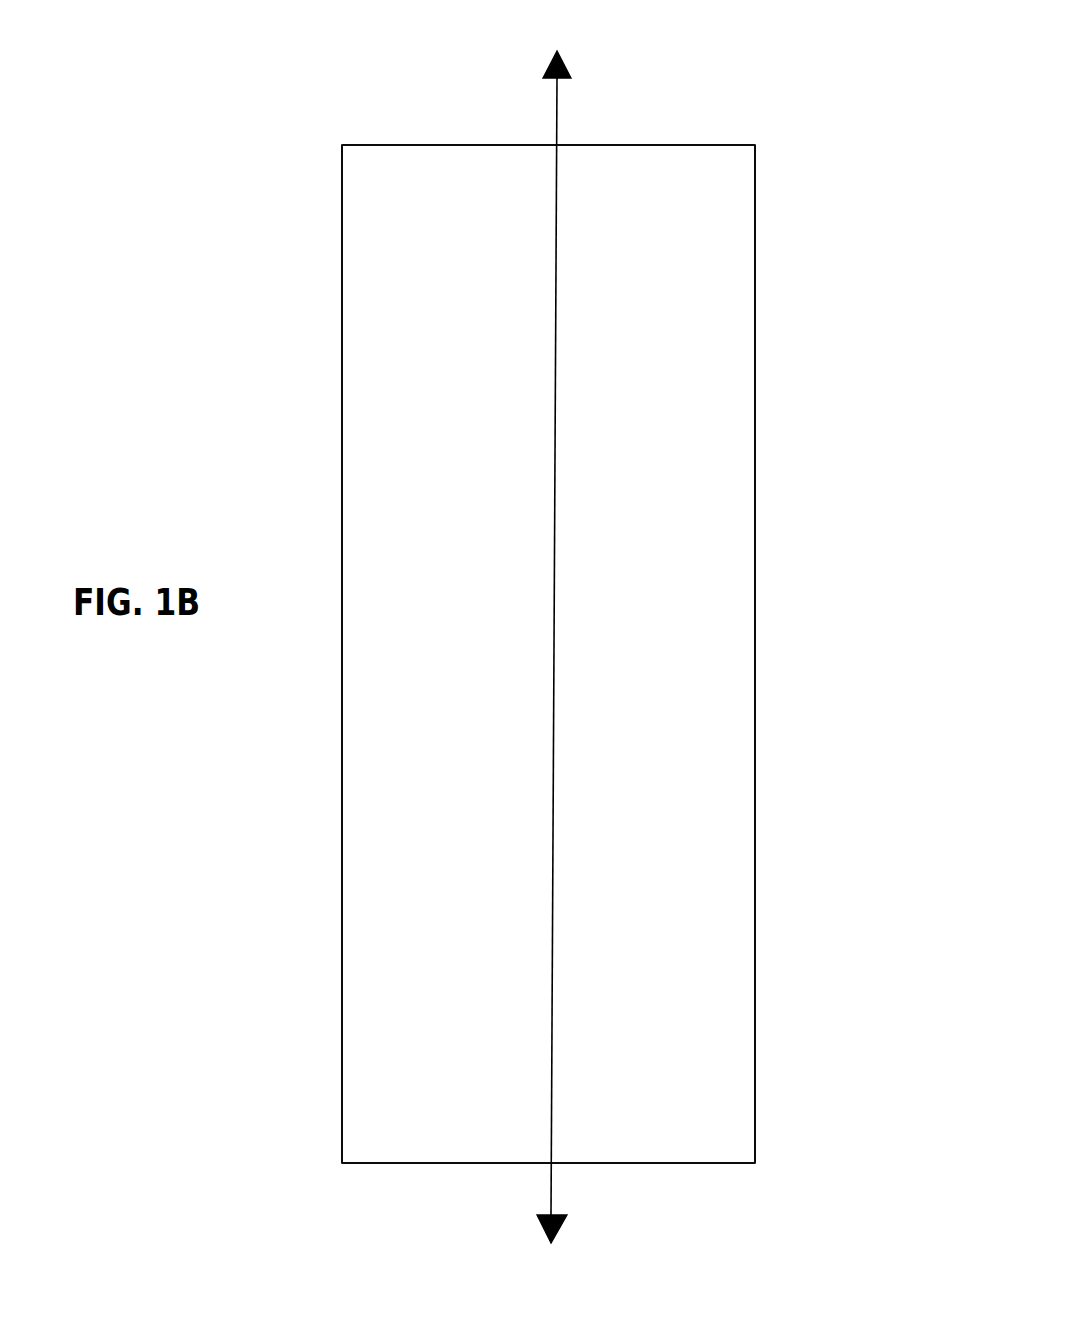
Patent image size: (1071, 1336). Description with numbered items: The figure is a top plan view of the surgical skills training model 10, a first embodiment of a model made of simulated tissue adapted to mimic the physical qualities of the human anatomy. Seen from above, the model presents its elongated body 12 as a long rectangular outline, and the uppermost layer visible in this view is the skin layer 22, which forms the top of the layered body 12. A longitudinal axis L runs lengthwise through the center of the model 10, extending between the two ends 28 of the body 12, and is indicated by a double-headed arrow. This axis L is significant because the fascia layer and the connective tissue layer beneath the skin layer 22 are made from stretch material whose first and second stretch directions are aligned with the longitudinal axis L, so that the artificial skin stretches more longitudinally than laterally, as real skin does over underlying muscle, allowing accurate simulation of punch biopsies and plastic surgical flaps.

The surgical skills training model 10 is at (858, 140).
The elongated body 12 is at (755, 538).
The skin layer 22 is at (442, 963).
The ends 28 is at (597, 145).
The longitudinal axis L is at (555, 368).